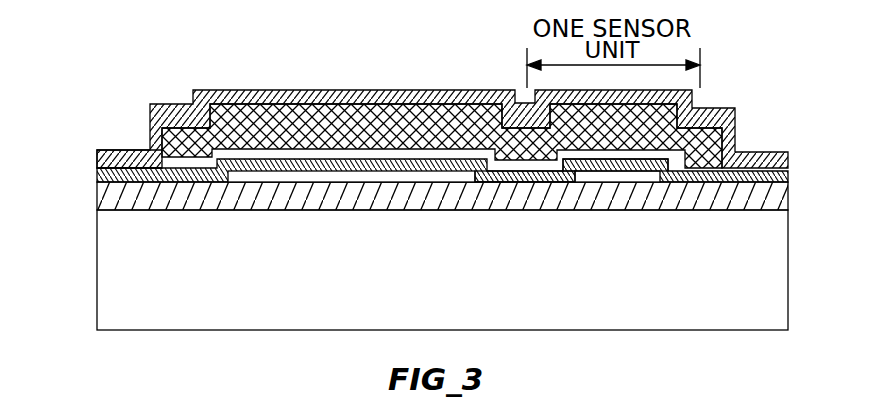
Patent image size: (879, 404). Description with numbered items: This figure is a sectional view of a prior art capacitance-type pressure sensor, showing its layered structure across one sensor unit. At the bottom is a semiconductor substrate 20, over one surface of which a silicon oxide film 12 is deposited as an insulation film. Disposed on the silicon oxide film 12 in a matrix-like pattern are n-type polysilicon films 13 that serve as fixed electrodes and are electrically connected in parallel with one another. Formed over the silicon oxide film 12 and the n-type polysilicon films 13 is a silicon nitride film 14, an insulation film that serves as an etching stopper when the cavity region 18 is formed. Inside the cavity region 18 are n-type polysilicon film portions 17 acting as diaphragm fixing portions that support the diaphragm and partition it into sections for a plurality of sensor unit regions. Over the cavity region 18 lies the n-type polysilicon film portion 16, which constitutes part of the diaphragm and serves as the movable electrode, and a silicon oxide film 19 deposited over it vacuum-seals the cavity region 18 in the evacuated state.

The silicon oxide film 12 is at (777, 204).
The n-type polysilicon films 13 is at (409, 173).
The silicon nitride film 14 is at (97, 177).
The n-type polysilicon film portion 16 is at (335, 90).
The n-type polysilicon film portions 17 is at (528, 162).
The cavity region 18 is at (617, 158).
The silicon oxide film 19 is at (255, 90).
The semiconductor substrate 20 is at (775, 284).